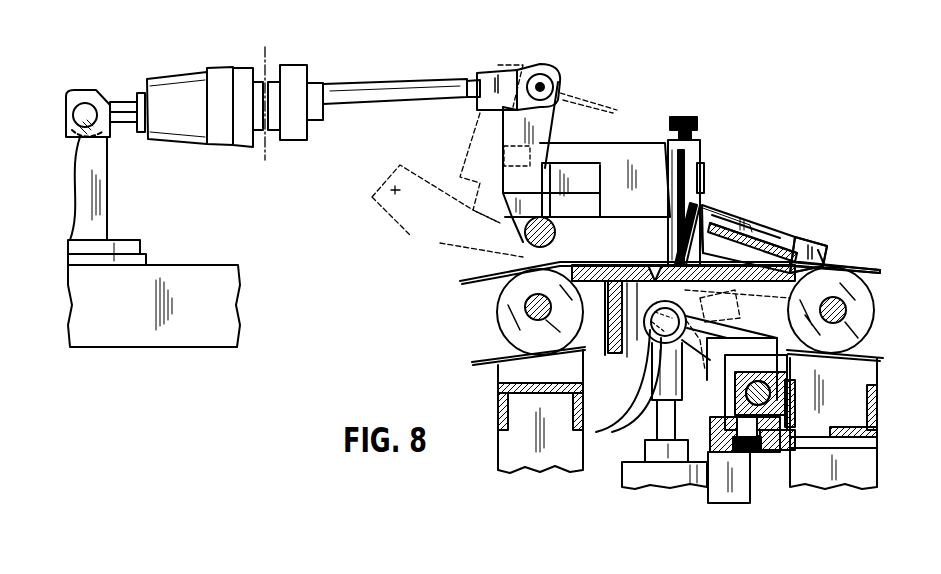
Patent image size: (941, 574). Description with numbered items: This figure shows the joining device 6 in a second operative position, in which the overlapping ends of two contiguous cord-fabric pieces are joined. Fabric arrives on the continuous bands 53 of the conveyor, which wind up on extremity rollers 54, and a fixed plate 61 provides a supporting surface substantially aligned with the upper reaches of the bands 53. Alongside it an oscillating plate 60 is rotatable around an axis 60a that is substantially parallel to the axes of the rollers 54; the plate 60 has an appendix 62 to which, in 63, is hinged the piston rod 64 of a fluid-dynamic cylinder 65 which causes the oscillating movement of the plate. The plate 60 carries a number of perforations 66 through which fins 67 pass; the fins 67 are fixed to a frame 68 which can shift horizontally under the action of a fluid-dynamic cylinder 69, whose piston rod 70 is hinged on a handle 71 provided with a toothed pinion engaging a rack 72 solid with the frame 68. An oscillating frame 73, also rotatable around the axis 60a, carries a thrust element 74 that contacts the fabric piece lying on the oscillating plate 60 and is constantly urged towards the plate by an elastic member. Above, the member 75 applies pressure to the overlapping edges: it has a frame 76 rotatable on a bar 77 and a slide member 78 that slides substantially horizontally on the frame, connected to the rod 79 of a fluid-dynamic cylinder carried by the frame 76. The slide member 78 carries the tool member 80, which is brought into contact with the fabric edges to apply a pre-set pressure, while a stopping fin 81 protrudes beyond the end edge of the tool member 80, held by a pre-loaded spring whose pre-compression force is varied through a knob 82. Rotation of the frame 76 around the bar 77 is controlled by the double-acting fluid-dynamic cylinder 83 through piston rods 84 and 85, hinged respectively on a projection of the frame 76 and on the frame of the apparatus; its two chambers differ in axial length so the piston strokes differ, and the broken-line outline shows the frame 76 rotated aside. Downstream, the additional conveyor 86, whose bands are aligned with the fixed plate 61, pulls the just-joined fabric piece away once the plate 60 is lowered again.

The joining device 6 is at (818, 158).
The continuous bands 53 is at (877, 268).
The extremity rollers 54 is at (848, 318).
The oscillating plate 60 is at (795, 245).
The axis 60a is at (818, 260).
The fixed plate 61 is at (613, 263).
The appendix 62 is at (640, 380).
The hinge point 63 is at (645, 400).
The piston rod 64 is at (653, 431).
The fluid-dynamic cylinder 65 is at (645, 478).
The perforations 66 is at (612, 319).
The fins 67 is at (616, 355).
The frame 68 is at (714, 392).
The fluid-dynamic cylinder 69 is at (748, 490).
The piston rod 70 is at (722, 421).
The handle 71 is at (797, 395).
The rack 72 is at (762, 340).
The oscillating frame 73 is at (735, 205).
The thrust element 74 is at (745, 218).
The pressure applying member 75 is at (632, 125).
The frame 76 is at (575, 185).
The bar 77 is at (557, 238).
The slide member 78 is at (700, 165).
The rod 79 is at (787, 235).
The tool member 80 is at (672, 224).
The stopping fin 81 is at (722, 214).
The knob 82 is at (697, 122).
The fluid-dynamic cylinder 83 is at (208, 72).
The piston rod 84 is at (358, 106).
The piston rod 85 is at (123, 102).
The conveyors 86 is at (472, 284).